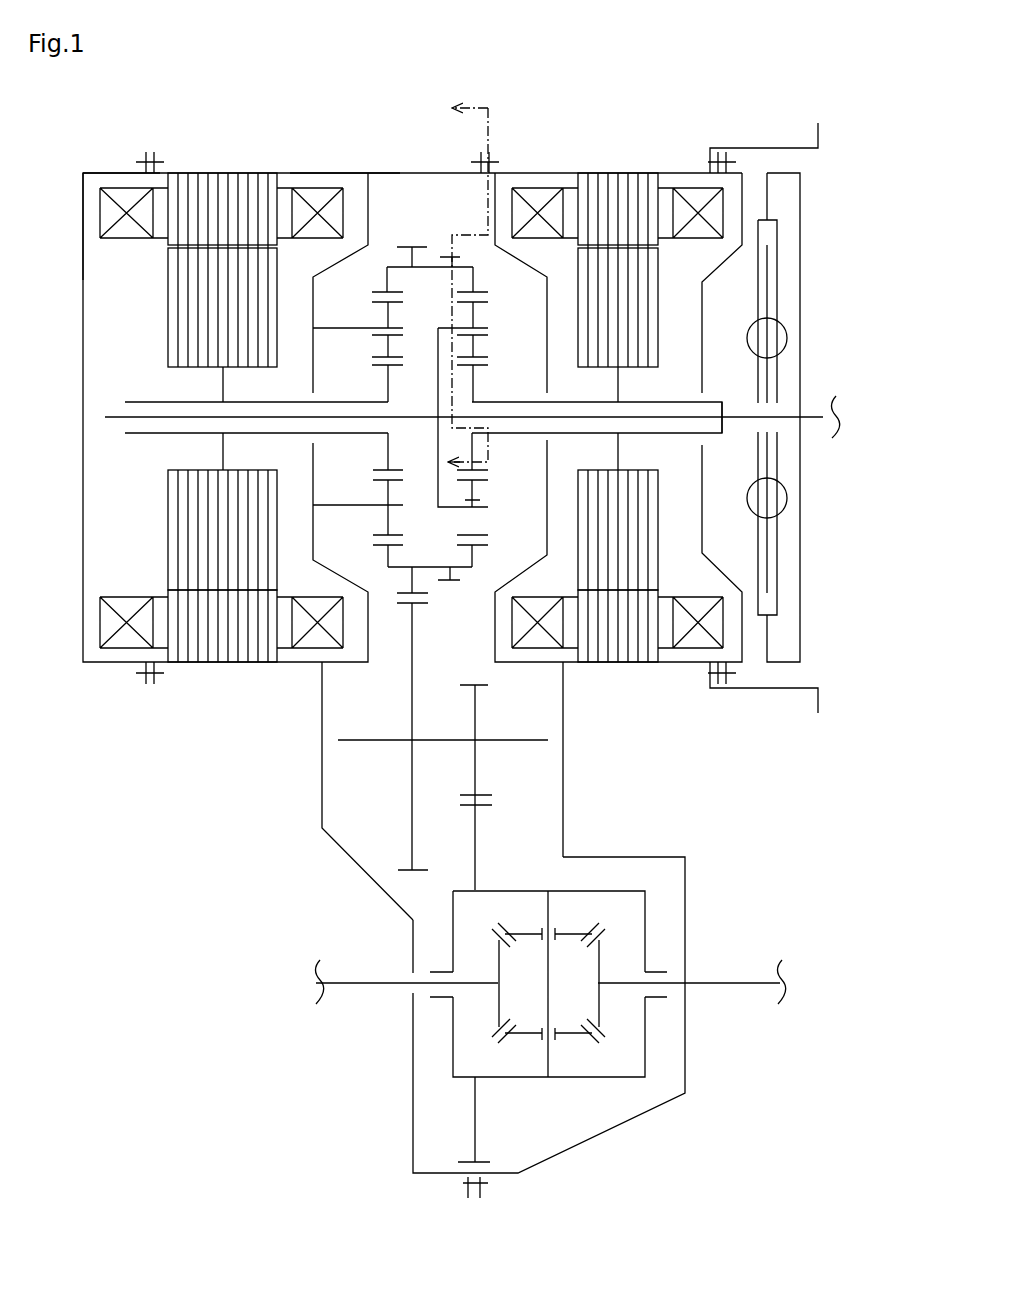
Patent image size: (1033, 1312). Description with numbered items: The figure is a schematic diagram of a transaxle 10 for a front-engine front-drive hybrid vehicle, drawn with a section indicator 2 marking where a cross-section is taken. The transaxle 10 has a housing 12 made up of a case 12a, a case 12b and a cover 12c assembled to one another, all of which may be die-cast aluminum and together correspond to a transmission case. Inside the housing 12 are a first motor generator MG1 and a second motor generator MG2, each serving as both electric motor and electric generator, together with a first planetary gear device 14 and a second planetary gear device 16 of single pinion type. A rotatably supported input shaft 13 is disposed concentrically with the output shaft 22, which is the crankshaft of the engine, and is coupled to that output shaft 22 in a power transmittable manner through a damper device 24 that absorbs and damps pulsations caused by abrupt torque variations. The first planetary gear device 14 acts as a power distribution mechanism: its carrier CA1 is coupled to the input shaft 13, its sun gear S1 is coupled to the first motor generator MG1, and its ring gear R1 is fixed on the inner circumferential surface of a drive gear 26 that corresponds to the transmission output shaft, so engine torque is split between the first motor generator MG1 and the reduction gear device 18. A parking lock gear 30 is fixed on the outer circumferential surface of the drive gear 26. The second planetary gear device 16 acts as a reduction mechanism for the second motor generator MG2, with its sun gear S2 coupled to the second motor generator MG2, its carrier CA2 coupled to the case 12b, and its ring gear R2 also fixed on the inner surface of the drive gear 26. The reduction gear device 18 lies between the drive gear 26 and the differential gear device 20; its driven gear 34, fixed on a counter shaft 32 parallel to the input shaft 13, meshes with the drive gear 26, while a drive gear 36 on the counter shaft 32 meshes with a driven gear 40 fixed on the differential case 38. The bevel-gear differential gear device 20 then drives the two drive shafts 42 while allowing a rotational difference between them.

The section line 2 is at (446, 288).
The transaxle 10 is at (627, 137).
The housing 12 is at (290, 170).
The case 12a is at (757, 148).
The case 12b is at (345, 172).
The cover 12c is at (108, 172).
The input shaft 13 is at (738, 420).
The first planetary gear device 14 is at (481, 556).
The second planetary gear device 16 is at (386, 584).
The reduction gear device 18 is at (358, 832).
The differential gear device 20 is at (595, 1092).
The output shaft 22 is at (830, 396).
The damper device 24 is at (757, 652).
The drive gear 26 is at (412, 247).
The parking lock gear 30 is at (452, 257).
The counter shaft 32 is at (548, 740).
The driven gear 34 is at (403, 871).
The drive gear 36 is at (490, 685).
The differential case 38 is at (618, 890).
The driven gear 40 is at (484, 806).
The drive shafts 42 is at (363, 986).
The ring gear R1 is at (488, 293).
The ring gear R2 is at (372, 293).
The carrier CA1 is at (480, 334).
The carrier CA2 is at (384, 334).
The sun gear S1 is at (480, 372).
The sun gear S2 is at (380, 372).
The first motor generator MG1 is at (632, 672).
The second motor generator MG2 is at (232, 678).